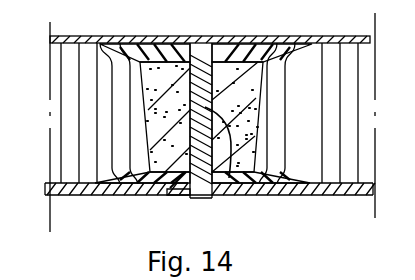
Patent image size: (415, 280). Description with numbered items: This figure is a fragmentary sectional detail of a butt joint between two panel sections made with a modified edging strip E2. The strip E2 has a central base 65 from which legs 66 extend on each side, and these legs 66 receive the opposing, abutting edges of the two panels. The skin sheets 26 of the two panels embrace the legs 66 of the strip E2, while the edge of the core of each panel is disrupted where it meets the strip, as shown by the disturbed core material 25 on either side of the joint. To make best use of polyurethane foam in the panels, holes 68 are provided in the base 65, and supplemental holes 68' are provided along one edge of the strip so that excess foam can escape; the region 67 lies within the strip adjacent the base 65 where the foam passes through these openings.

The finned heat exchange body 25 is at (65, 113).
The end plate 26 is at (85, 36).
The sealing gasket 66 is at (147, 14).
The filler cone element E2 is at (171, 46).
The upper tube section 68' is at (219, 66).
The tube 67 is at (201, 196).
The spacer 65 is at (174, 196).
The bulged membrane 68 is at (244, 169).